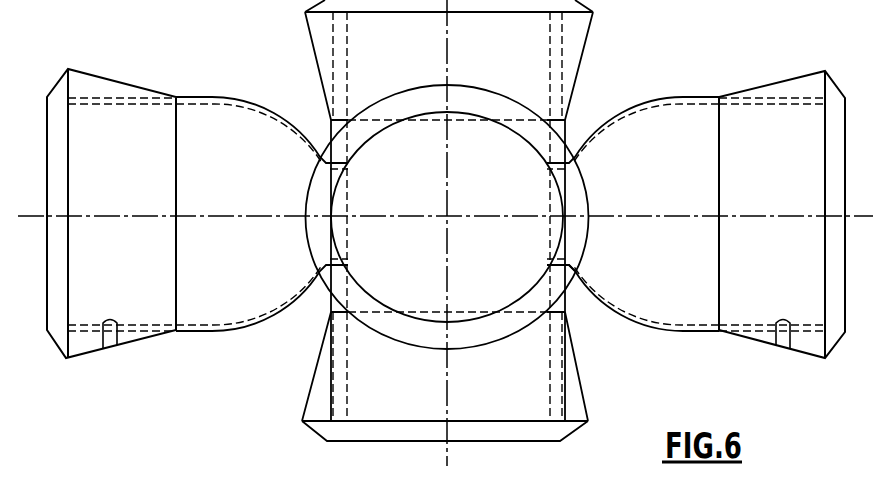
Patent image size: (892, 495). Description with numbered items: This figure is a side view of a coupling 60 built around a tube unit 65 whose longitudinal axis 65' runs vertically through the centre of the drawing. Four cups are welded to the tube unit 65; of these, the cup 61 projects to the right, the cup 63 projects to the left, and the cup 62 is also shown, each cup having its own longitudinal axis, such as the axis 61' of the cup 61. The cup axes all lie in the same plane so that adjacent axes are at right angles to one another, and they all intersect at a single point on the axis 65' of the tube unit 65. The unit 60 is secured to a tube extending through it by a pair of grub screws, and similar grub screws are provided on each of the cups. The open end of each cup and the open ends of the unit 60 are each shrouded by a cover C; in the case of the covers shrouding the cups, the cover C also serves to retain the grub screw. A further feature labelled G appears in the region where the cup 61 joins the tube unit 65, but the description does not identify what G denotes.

The coupling 60 is at (568, 286).
The cup 61 is at (764, 208).
The longitudinal axis of cup 61' is at (660, 243).
The cup 62 is at (377, 148).
The cup 63 is at (208, 118).
The tube unit 65 is at (430, 359).
The longitudinal axis of tube unit 65' is at (396, 395).
The gap / connector tube region G is at (447, 197).
The cover C is at (134, 313).